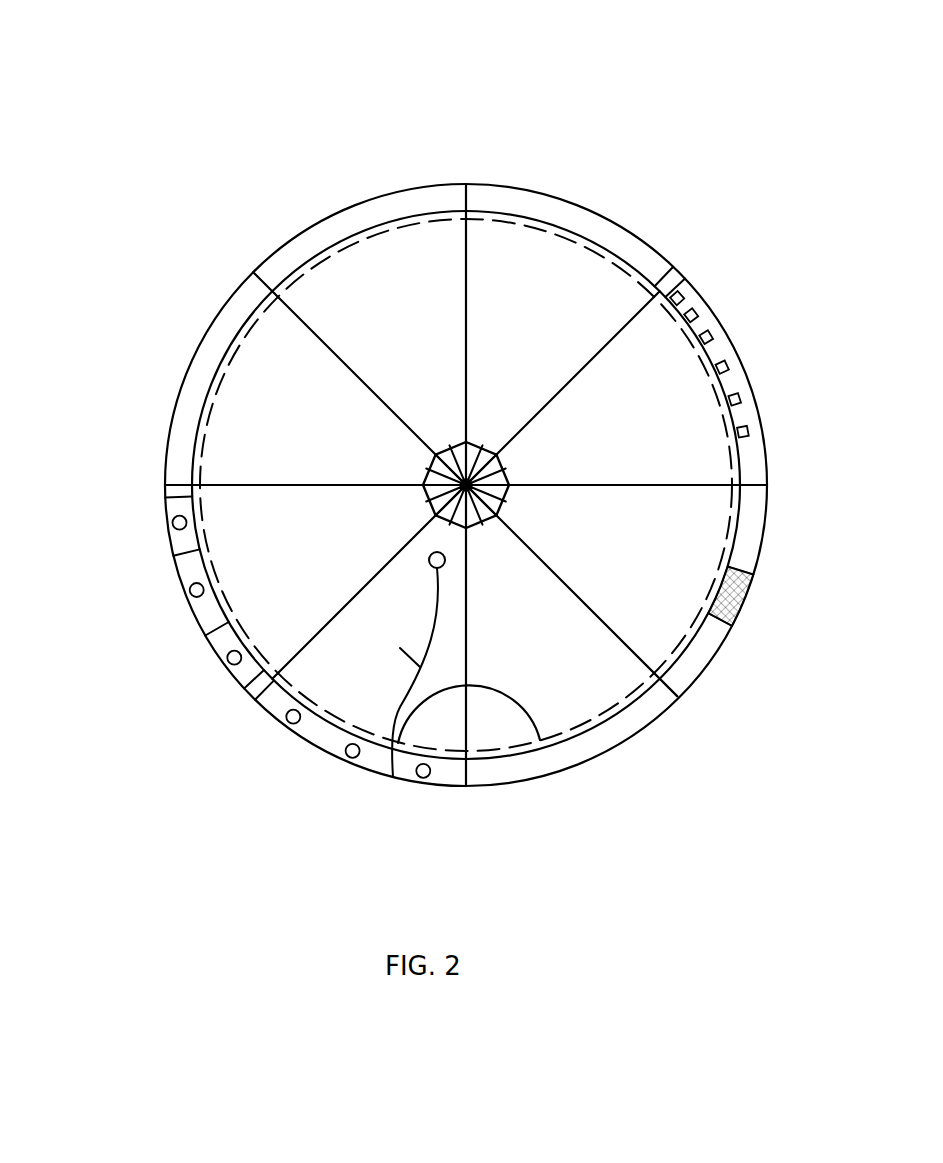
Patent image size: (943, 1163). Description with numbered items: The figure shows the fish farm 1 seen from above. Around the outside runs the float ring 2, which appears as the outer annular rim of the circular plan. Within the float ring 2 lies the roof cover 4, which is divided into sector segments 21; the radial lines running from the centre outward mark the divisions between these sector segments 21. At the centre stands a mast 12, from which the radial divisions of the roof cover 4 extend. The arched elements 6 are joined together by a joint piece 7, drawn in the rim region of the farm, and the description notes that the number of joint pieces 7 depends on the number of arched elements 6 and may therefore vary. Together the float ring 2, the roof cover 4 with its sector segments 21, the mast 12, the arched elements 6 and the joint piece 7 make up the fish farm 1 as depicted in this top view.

The fish farm 1 is at (152, 327).
The float ring 2 is at (293, 253).
The roof cover 4 is at (657, 553).
The arched elements 6 is at (627, 228).
The joint piece 7 is at (690, 277).
The mast 12 is at (457, 492).
The sector segments 21 is at (427, 270).